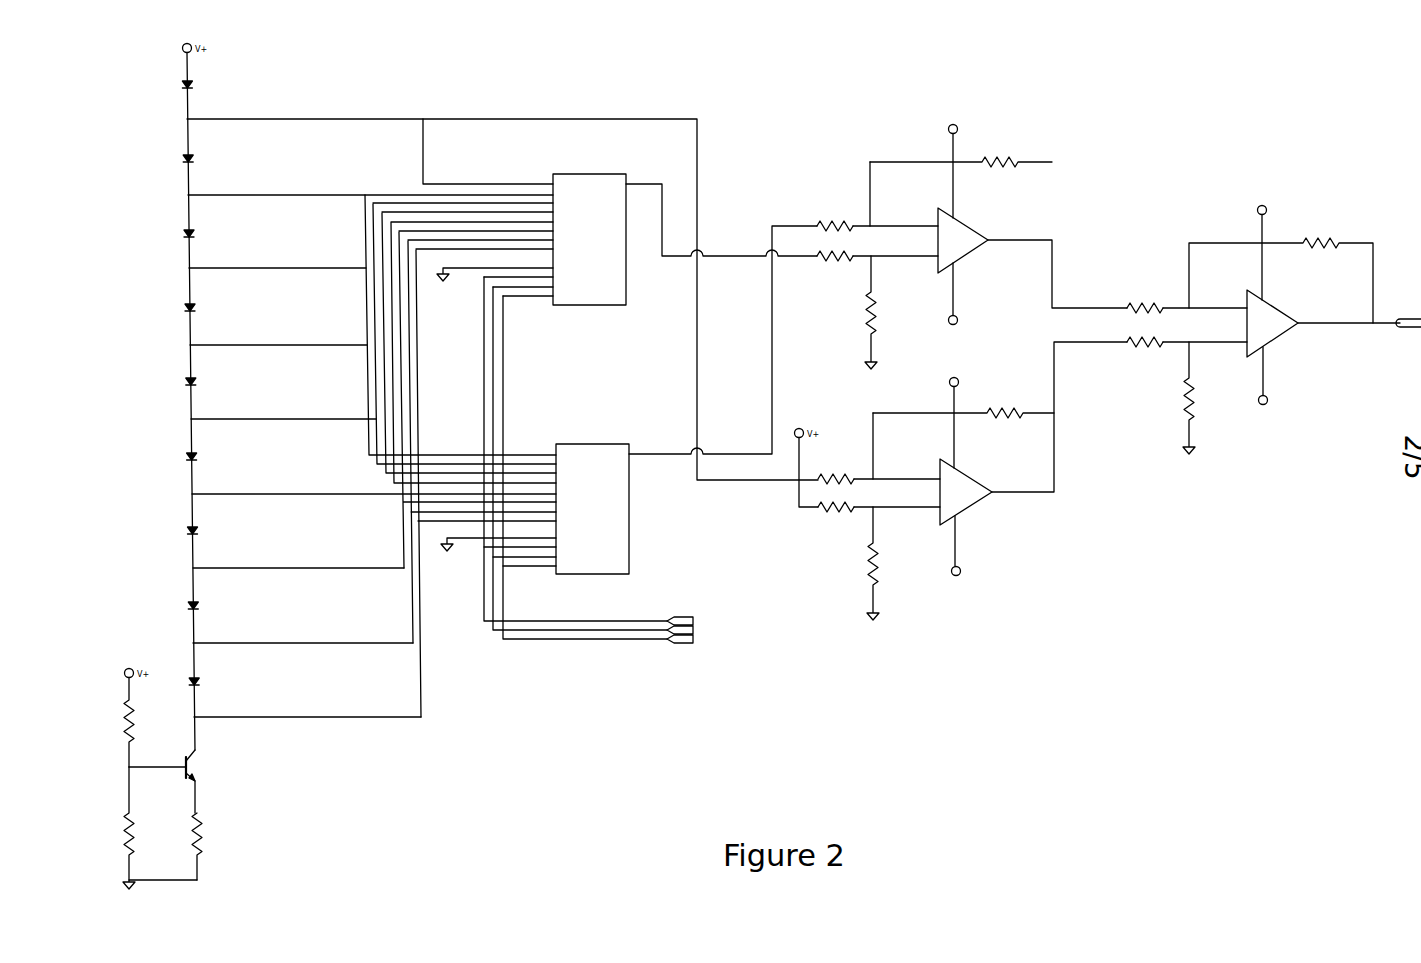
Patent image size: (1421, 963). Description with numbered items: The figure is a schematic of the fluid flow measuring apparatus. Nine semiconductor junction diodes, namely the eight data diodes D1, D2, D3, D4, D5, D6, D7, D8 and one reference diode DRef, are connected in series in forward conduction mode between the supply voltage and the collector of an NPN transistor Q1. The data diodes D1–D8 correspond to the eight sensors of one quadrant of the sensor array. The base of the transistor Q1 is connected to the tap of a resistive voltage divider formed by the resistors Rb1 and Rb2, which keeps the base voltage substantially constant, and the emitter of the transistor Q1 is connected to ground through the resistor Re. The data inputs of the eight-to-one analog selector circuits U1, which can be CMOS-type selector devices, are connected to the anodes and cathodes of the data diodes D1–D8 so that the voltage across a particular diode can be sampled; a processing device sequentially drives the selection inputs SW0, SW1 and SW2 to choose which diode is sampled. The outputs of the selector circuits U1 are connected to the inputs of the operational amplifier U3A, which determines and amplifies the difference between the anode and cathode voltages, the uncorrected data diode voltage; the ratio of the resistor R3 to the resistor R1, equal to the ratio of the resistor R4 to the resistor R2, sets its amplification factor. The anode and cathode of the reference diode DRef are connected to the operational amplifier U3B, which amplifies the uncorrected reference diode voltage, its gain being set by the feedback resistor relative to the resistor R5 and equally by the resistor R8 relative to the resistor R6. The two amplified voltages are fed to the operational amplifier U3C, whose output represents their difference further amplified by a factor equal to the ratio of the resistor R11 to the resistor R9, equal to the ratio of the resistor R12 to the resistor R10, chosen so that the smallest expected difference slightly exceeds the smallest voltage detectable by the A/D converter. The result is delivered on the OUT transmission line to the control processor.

The reference diode DRef is at (219, 84).
The data diode D1 is at (211, 159).
The data diode D2 is at (211, 234).
The data diode D3 is at (212, 308).
The data diode D4 is at (213, 382).
The data diode D5 is at (214, 457).
The data diode D6 is at (215, 531).
The data diode D7 is at (215, 606).
The data diode D8 is at (216, 682).
The analog selector circuit U1 is at (536, 239).
The operational amplifier U3A is at (963, 226).
The operational amplifier U3B is at (968, 478).
The operational amplifier U3C is at (1271, 306).
The resistor R1 is at (835, 219).
The resistor R2 is at (835, 264).
The resistor R3 is at (961, 155).
The resistor R4 is at (861, 312).
The resistor R5 is at (836, 472).
The resistor R6 is at (836, 515).
The resistor R8 is at (863, 563).
The resistor R9 is at (1145, 302).
The resistor R10 is at (1145, 350).
The resistor R11 is at (1281, 263).
The resistor R12 is at (1179, 398).
The NPN transistor Q1 is at (205, 781).
The resistor Rb1 is at (145, 722).
The resistor Rb2 is at (145, 823).
The resistor Re is at (209, 845).
The selection input SW0 is at (691, 639).
The selection input SW1 is at (691, 630).
The selection input SW2 is at (691, 621).
The Out transmission line OUT is at (1359, 331).